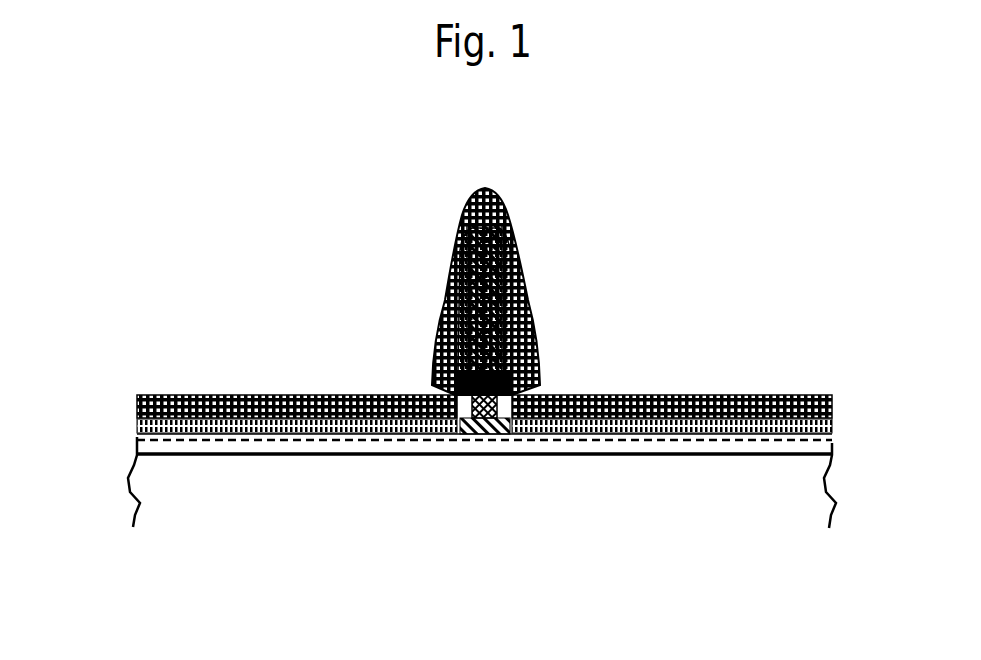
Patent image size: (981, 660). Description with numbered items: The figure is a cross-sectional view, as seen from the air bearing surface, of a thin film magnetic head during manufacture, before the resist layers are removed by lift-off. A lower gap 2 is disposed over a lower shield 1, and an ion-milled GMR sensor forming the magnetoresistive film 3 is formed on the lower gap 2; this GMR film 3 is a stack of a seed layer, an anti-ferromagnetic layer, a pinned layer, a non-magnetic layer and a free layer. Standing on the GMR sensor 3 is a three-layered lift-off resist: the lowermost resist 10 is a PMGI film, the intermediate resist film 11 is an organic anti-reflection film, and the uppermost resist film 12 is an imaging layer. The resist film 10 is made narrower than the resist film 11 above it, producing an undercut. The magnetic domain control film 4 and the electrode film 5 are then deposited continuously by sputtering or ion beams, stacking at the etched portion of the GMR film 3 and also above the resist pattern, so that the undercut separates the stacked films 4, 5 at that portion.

The lower shield 1 is at (765, 498).
The lower gap 2 is at (820, 448).
The magnetoresistive film (GMR sensor) 3 is at (475, 425).
The magnetic domain control film 4 is at (153, 393).
The electrode film 5 is at (243, 393).
The resist film (lowermost layer) 10 is at (506, 400).
The resist film (intermediate layer) 11 is at (520, 358).
The resist film (uppermost layer) 12 is at (535, 310).